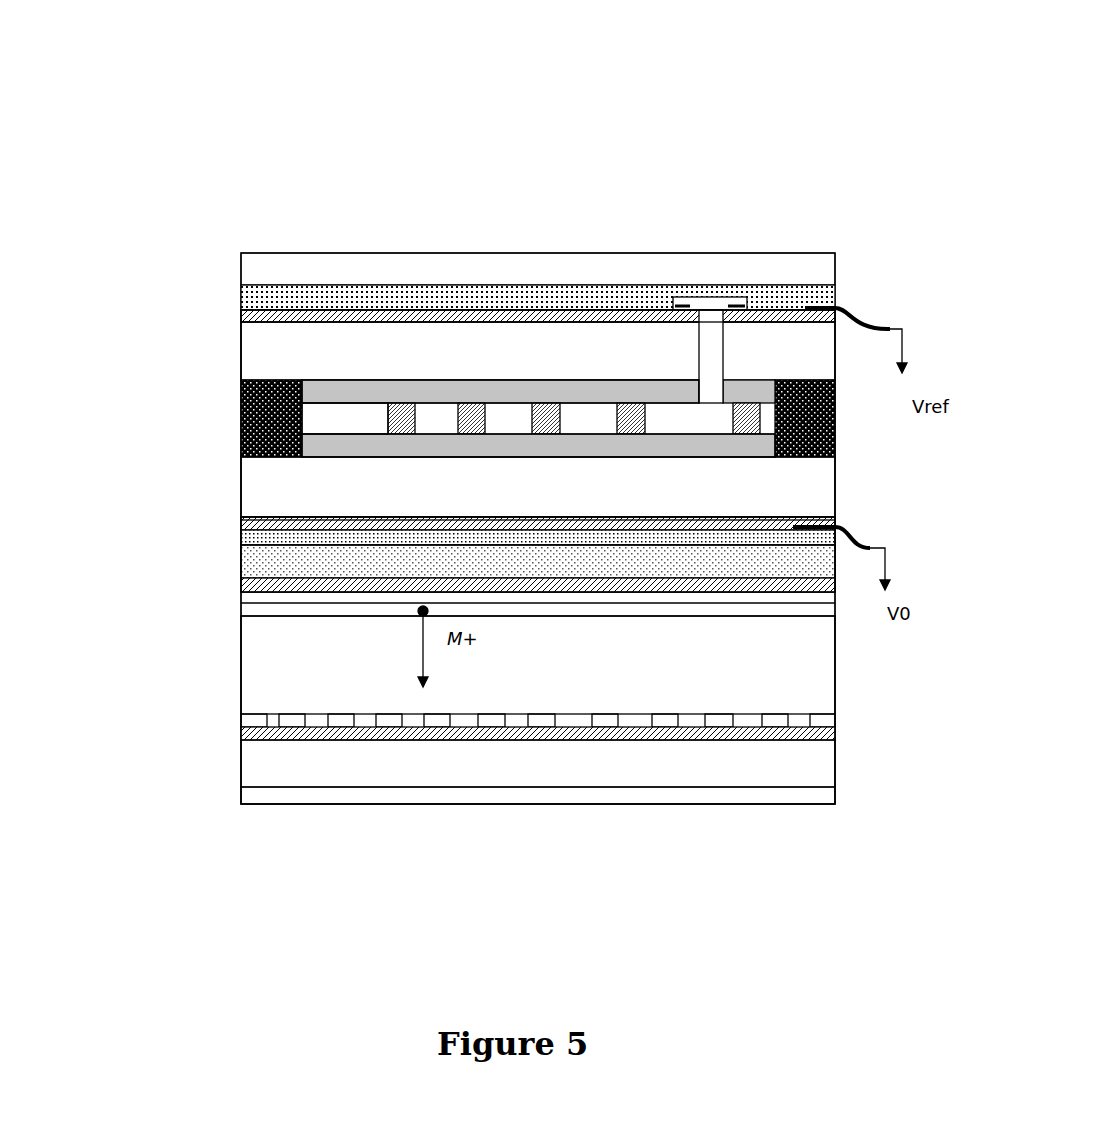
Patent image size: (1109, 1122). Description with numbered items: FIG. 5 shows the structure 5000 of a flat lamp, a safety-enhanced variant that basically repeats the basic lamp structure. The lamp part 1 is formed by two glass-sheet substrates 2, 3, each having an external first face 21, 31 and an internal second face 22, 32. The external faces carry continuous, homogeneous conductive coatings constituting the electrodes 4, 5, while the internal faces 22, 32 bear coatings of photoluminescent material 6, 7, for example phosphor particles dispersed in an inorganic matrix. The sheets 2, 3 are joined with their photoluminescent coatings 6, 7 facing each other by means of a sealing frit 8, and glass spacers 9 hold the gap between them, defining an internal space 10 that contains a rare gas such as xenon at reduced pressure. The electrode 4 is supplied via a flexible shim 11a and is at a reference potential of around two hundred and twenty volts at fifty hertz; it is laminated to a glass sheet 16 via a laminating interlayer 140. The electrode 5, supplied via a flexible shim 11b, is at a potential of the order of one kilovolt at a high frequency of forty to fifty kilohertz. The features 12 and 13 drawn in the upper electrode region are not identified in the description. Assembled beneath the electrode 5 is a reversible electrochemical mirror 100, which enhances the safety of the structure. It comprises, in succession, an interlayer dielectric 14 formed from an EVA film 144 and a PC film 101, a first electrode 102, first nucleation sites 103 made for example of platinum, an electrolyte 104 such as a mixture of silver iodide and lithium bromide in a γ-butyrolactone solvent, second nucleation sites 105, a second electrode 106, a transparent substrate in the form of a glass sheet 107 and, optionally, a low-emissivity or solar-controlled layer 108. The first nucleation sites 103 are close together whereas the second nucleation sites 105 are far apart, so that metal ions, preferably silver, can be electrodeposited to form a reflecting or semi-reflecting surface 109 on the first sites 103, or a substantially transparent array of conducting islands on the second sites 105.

The lamp structure 5000 is at (723, 107).
The glass sheet 16 is at (287, 262).
The laminating interlayer 140 is at (241, 296).
The electrode 4 is at (760, 317).
The contact opening 12 is at (716, 335).
The glass sheet 2 is at (250, 344).
The sealing frit 8 is at (241, 430).
The photoluminescent material coating 6 is at (487, 387).
The via connection 13 is at (712, 308).
The glass spacers 9 is at (552, 417).
The photoluminescent material coating 7 is at (318, 450).
The internal space 10 is at (336, 418).
The internal main face 22 is at (368, 392).
The external main face 21 is at (389, 322).
The internal main face 32 is at (600, 450).
The glass sheet 3 is at (261, 501).
The external main face 31 is at (415, 517).
The EVA film 144 is at (250, 543).
The interlayer dielectric 14 is at (142, 575).
The PC film 101 is at (261, 569).
The first electrode 102 is at (262, 586).
The electrode 5 is at (763, 523).
The lamp part 1 is at (837, 310).
The flexible shim 11a is at (870, 327).
The flexible shim 11b is at (838, 528).
The reflecting surface 109 is at (248, 608).
The first nucleation sites 103 is at (745, 595).
The electrolyte 104 is at (793, 647).
The second nucleation sites 105 is at (777, 720).
The second electrode 106 is at (765, 735).
The glass sheet 107 is at (252, 750).
The low-emissivity or solar-controlled layer 108 is at (403, 797).
The reversible electrochemical mirror 100 is at (163, 550).